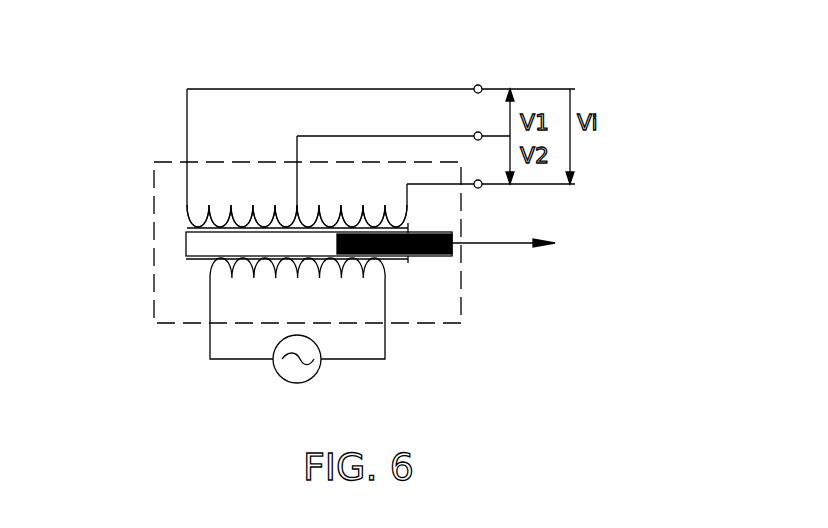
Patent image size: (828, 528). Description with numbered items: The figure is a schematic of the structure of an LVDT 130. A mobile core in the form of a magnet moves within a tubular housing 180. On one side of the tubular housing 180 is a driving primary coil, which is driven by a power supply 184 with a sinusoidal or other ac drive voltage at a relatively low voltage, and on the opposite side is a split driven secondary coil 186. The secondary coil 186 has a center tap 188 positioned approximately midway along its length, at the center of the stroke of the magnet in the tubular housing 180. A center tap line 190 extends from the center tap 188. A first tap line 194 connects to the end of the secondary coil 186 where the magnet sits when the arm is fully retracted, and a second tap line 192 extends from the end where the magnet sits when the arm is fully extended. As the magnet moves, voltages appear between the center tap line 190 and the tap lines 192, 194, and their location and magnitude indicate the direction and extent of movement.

The LVDT 130 is at (582, 242).
The tubular housing 180 is at (187, 226).
The power supply 184 is at (315, 371).
The secondary coil 186 is at (373, 203).
The center tap 188 is at (288, 203).
The center tap line 190 is at (479, 132).
The second tap line 192 is at (480, 188).
The first tap line 194 is at (479, 85).